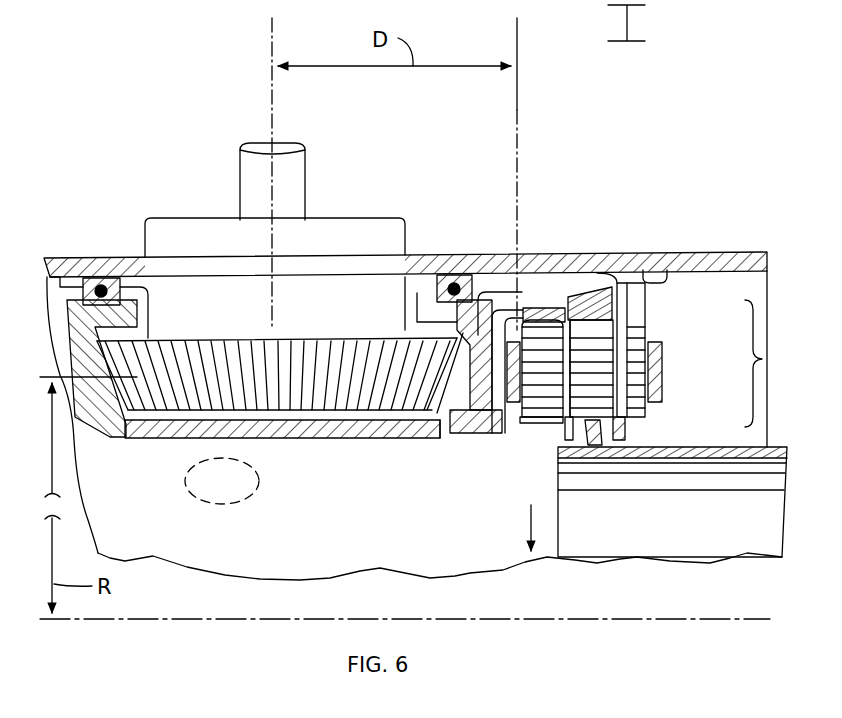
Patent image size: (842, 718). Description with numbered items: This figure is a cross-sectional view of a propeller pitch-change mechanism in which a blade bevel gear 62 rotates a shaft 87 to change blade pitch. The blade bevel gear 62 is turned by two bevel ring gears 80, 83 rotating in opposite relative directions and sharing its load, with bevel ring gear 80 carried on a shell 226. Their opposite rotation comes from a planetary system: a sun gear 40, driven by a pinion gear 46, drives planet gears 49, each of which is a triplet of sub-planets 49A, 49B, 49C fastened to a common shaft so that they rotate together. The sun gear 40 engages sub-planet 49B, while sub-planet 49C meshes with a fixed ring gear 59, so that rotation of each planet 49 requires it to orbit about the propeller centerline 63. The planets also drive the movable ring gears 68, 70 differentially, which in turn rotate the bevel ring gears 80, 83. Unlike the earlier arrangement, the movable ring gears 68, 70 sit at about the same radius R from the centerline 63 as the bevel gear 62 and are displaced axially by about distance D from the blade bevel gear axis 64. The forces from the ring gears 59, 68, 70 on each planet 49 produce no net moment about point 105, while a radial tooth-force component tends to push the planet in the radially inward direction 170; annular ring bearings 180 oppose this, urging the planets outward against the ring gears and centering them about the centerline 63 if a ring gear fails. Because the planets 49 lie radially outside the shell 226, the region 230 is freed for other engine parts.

The sun gear 40 is at (580, 463).
The pinion gear 46 is at (627, 17).
The planet gear 49 is at (758, 305).
The sub-planet 49A is at (537, 426).
The sub-planet 49B is at (612, 440).
The sub-planet 49C is at (635, 423).
The fixed ring gear 59 is at (634, 310).
The blade bevel gear 62 is at (352, 350).
The propeller centerline 63 is at (410, 618).
The blade bevel gear axis 64 is at (278, 32).
The movable ring gear 68 is at (540, 312).
The movable ring gear 70 is at (594, 318).
The bevel ring gear 80 is at (84, 422).
The bevel ring gear 83 is at (453, 432).
The shaft 87 is at (258, 184).
The point 105 is at (632, 358).
The radially inward direction 170 is at (527, 522).
The annular ring bearing 180 is at (567, 430).
The shell 226 is at (403, 440).
The region 230 is at (258, 498).